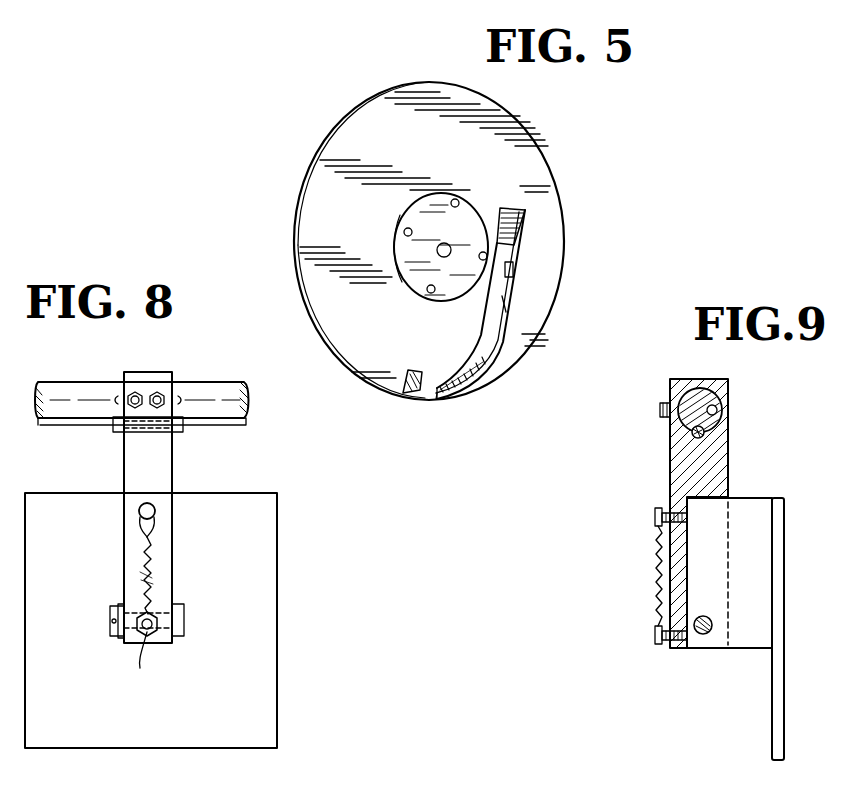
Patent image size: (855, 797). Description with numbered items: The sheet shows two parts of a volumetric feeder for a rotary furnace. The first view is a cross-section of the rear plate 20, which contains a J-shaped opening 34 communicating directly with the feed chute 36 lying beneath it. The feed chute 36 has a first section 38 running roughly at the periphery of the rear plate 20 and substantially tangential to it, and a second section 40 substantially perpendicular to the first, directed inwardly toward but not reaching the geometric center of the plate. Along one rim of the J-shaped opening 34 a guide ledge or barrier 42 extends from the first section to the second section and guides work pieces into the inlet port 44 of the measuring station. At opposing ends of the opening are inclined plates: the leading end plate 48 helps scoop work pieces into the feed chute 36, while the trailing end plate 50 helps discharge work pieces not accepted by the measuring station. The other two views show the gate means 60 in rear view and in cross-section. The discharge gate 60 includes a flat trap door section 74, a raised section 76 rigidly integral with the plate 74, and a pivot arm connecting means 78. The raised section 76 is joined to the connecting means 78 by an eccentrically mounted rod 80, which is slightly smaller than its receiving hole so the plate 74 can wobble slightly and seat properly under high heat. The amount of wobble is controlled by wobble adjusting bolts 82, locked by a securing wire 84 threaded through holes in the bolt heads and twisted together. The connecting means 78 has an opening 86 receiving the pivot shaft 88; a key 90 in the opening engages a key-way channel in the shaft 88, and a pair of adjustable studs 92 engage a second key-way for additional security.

In FIG. 5, the rear plate 20 is at (444, 159).
In FIG. 5, the J-shaped opening 34 is at (462, 338).
In FIG. 5, the feed chute 36 is at (487, 360).
In FIG. 5, the first section 38 is at (432, 382).
In FIG. 5, the second section 40 is at (498, 312).
In FIG. 5, the guide ledge or barrier 42 is at (467, 392).
In FIG. 5, the inlet port 44 is at (513, 273).
In FIG. 5, the leading end plate 48 is at (378, 404).
In FIG. 5, the trailing end plate 50 is at (517, 226).
In FIG. 8, the gate means 60 is at (240, 492).
In FIG. 9, the gate means 60 is at (740, 457).
In FIG. 8, the flat trap door section 74 is at (277, 585).
In FIG. 9, the flat trap door section 74 is at (785, 688).
In FIG. 9, the raised section 76 is at (760, 497).
In FIG. 8, the pivot arm connecting means 78 is at (120, 446).
In FIG. 9, the pivot arm connecting means 78 is at (678, 458).
In FIG. 8, the eccentrically mounted rod 80 is at (184, 614).
In FIG. 9, the eccentrically mounted rod 80 is at (711, 634).
In FIG. 8, the wobble adjusting bolts 82 is at (155, 512).
In FIG. 9, the wobble adjusting bolts 82 is at (655, 512).
In FIG. 8, the securing wire 84 is at (150, 576).
In FIG. 9, the securing wire 84 is at (657, 569).
In FIG. 9, the opening 86 is at (717, 409).
In FIG. 8, the pivot shaft 88 is at (96, 384).
In FIG. 9, the pivot shaft 88 is at (705, 398).
In FIG. 8, the key 90 is at (183, 432).
In FIG. 9, the key 90 is at (705, 432).
In FIG. 8, the adjustable studs 92 is at (157, 392).
In FIG. 9, the adjustable studs 92 is at (660, 409).